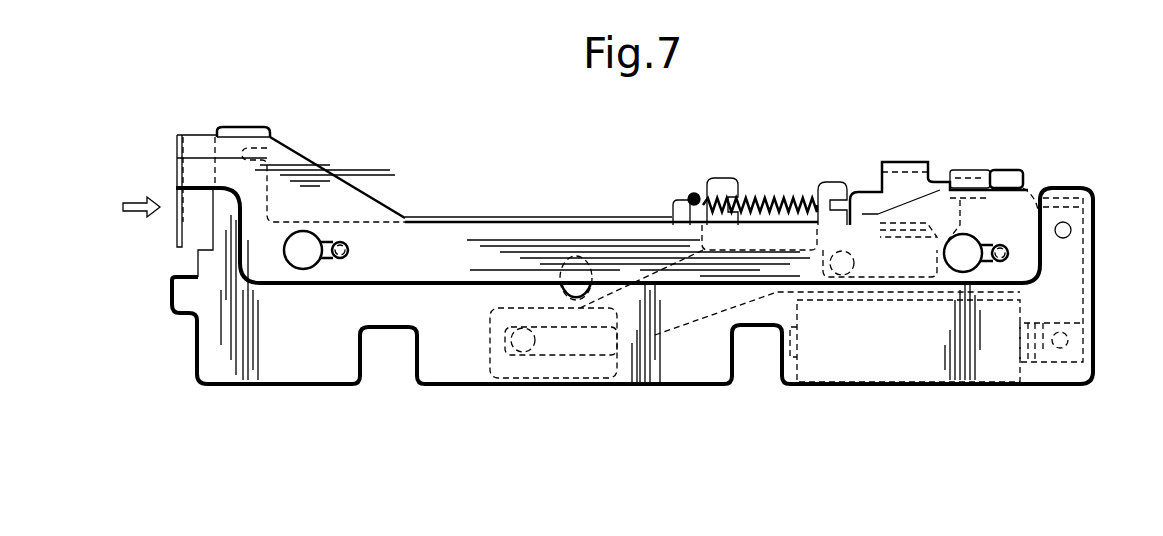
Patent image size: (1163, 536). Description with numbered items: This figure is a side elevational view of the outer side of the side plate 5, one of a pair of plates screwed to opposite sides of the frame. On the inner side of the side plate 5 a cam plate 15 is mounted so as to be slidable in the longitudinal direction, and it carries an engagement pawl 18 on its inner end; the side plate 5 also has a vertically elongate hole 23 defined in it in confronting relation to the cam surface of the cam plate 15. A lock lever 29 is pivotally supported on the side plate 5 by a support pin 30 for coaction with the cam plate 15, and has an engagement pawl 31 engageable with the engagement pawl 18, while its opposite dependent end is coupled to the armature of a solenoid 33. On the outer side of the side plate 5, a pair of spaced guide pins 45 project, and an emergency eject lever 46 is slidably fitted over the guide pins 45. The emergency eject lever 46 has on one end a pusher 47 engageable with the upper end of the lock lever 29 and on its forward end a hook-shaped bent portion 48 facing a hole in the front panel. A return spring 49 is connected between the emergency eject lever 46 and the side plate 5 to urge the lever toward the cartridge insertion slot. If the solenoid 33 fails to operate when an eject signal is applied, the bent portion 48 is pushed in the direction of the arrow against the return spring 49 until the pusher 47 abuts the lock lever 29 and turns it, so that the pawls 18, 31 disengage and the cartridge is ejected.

The side plate 5 is at (333, 384).
The cam plate 15 is at (668, 333).
The engagement pawl 18 is at (965, 200).
The vertically elongate hole 23 is at (576, 255).
The lock lever 29 is at (1015, 170).
The support pin 30 is at (1071, 229).
The engagement pawl 31 is at (940, 230).
The solenoid 33 is at (907, 378).
The guide pins 45 is at (348, 247).
The emergency eject lever 46 is at (383, 203).
The pusher 47 is at (975, 170).
The hook-shaped bent portion 48 is at (177, 236).
The return spring 49 is at (770, 195).